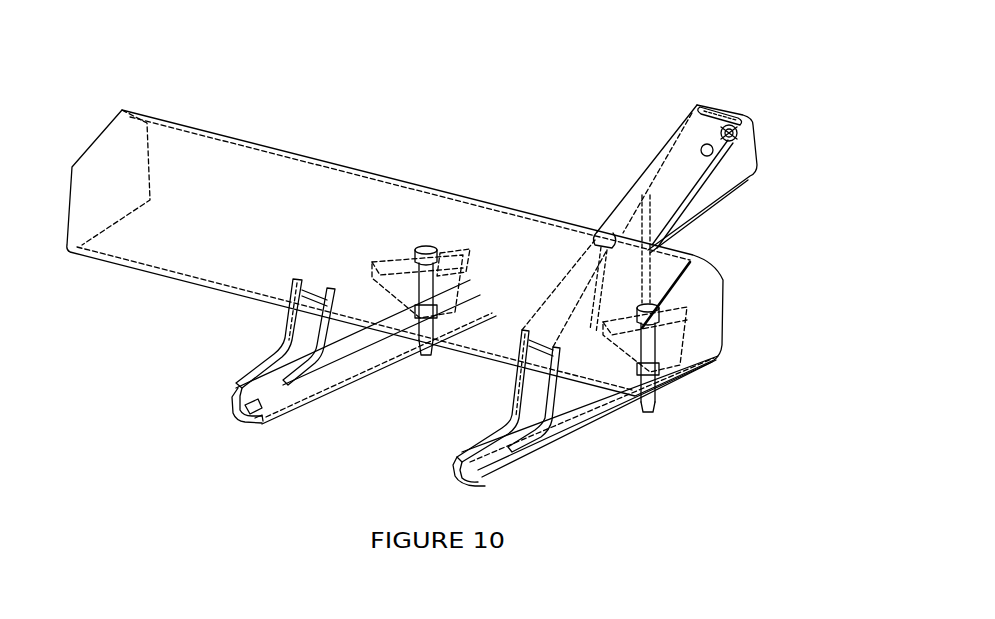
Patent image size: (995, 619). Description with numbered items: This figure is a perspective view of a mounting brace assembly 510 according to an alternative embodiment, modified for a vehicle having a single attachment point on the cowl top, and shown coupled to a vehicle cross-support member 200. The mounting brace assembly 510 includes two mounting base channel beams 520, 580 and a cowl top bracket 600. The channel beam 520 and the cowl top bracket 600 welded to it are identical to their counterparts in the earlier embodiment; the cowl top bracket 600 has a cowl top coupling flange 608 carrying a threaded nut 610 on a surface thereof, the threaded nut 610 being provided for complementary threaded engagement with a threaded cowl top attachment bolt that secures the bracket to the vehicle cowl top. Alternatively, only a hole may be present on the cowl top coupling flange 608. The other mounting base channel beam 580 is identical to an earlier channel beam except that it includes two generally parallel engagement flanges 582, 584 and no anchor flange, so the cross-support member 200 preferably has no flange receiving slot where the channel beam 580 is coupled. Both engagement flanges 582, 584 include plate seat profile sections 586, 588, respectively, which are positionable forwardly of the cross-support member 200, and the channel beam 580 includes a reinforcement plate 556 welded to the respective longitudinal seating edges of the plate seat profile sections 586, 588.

The cross-support member 200 is at (165, 148).
The mounting brace assembly 510 is at (566, 99).
The mounting base channel beam 520 is at (538, 428).
The reinforcement plate 556 is at (415, 248).
The mounting base channel beam 580 is at (228, 405).
The engagement flange 582 is at (330, 365).
The engagement flange 584 is at (325, 331).
The plate seat profile section 586 is at (463, 262).
The plate seat profile section 588 is at (395, 250).
The cowl top bracket 600 is at (717, 177).
The cowl top coupling flange 608 is at (718, 102).
The threaded nut 610 is at (742, 132).